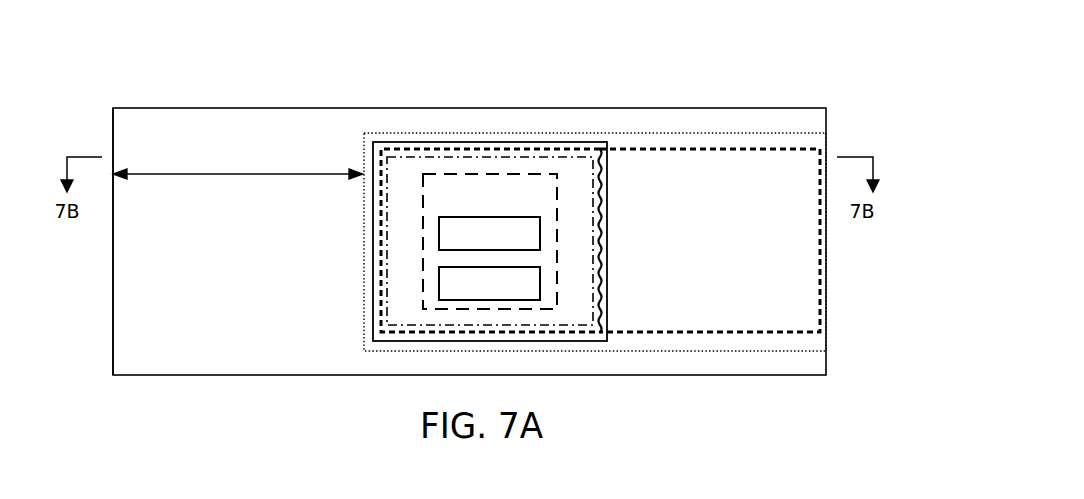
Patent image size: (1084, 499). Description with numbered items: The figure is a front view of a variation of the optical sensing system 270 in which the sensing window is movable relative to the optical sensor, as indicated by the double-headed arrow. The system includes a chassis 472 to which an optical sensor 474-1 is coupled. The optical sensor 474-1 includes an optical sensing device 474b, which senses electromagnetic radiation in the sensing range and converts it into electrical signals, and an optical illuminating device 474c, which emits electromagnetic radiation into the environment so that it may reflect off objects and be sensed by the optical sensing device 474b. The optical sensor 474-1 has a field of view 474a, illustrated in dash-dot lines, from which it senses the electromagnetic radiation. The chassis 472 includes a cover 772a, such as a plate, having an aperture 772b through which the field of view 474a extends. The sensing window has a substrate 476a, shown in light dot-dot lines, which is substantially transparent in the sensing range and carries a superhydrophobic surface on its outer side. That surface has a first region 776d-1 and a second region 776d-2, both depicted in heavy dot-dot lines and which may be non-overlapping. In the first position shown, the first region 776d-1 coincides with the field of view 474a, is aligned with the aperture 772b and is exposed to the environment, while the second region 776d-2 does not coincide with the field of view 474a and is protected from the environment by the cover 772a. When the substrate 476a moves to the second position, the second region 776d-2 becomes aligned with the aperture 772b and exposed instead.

The optical sensing system 270 is at (865, 75).
The chassis 472 is at (826, 357).
The cover 772a is at (146, 317).
The aperture 772b is at (372, 280).
The field of view 474a is at (390, 203).
The optical sensor 474-1 is at (465, 210).
The optical sensing device 474b is at (467, 243).
The optical illuminating device 474c is at (468, 293).
The substrate 476a is at (365, 317).
The first region 776d-1 is at (380, 248).
The second region 776d-2 is at (820, 237).